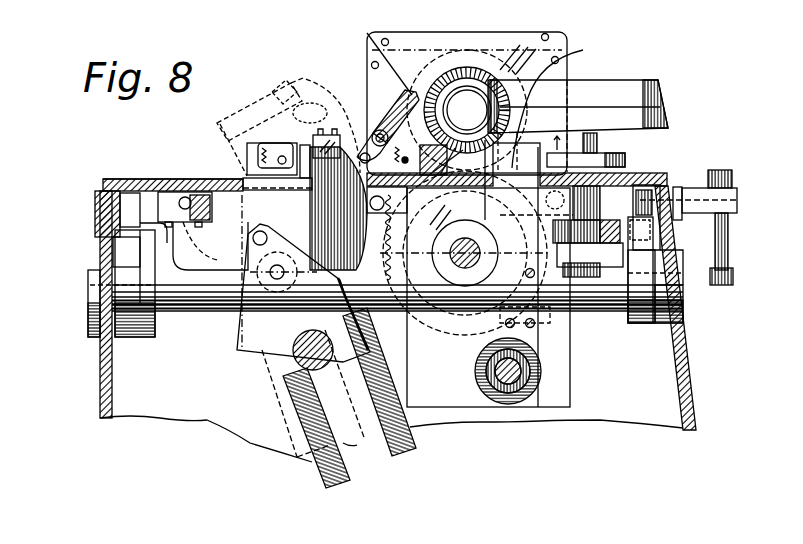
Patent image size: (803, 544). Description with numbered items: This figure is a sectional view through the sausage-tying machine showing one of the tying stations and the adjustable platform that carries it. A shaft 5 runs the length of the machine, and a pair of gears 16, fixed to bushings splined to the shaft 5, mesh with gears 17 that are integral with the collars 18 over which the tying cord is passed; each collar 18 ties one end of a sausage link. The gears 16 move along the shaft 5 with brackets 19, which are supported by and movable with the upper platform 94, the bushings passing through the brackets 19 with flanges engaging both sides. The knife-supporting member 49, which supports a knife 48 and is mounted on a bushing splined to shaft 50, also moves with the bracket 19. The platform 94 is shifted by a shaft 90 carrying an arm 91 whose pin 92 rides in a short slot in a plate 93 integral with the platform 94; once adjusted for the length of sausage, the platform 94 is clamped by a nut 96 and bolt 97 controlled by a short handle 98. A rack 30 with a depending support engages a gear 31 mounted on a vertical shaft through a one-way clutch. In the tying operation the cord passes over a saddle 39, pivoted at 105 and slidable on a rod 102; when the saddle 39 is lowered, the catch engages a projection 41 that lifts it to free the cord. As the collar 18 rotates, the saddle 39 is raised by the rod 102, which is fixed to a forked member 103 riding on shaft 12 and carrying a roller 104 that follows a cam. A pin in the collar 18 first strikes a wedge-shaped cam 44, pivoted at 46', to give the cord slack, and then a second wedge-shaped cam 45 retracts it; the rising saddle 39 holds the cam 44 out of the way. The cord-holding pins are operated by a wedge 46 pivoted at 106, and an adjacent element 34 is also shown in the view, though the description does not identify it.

The shaft 5 is at (460, 263).
The shaft 12 is at (280, 380).
The gears 16 is at (388, 283).
The gears 17 is at (367, 33).
The collars 18 is at (495, 85).
The brackets 19 is at (565, 392).
The rack 30 is at (600, 218).
The gear 31 is at (675, 260).
The arm 34 is at (648, 82).
The saddle 39 is at (232, 178).
The projection 41 is at (310, 113).
The wedge-shaped cam 44 is at (377, 128).
The second wedge-shaped cam 45 is at (573, 100).
The wedge 46 is at (467, 87).
The pivot 46' is at (355, 112).
The knife 48 is at (487, 160).
The knife-supporting member 49 is at (525, 345).
The shaft 50 is at (527, 372).
The shaft 90 is at (590, 290).
The arm 91 is at (157, 326).
The pin 92 is at (140, 225).
The plate 93 is at (125, 250).
The upper platform 94 is at (110, 178).
The nut 96 is at (150, 178).
The bolt 97 is at (150, 223).
The short handle 98 is at (728, 240).
The rod 102 is at (256, 245).
The forked member 103 is at (245, 348).
The roller 104 is at (270, 278).
The pivot 105 is at (172, 192).
The pivot 106 is at (550, 172).